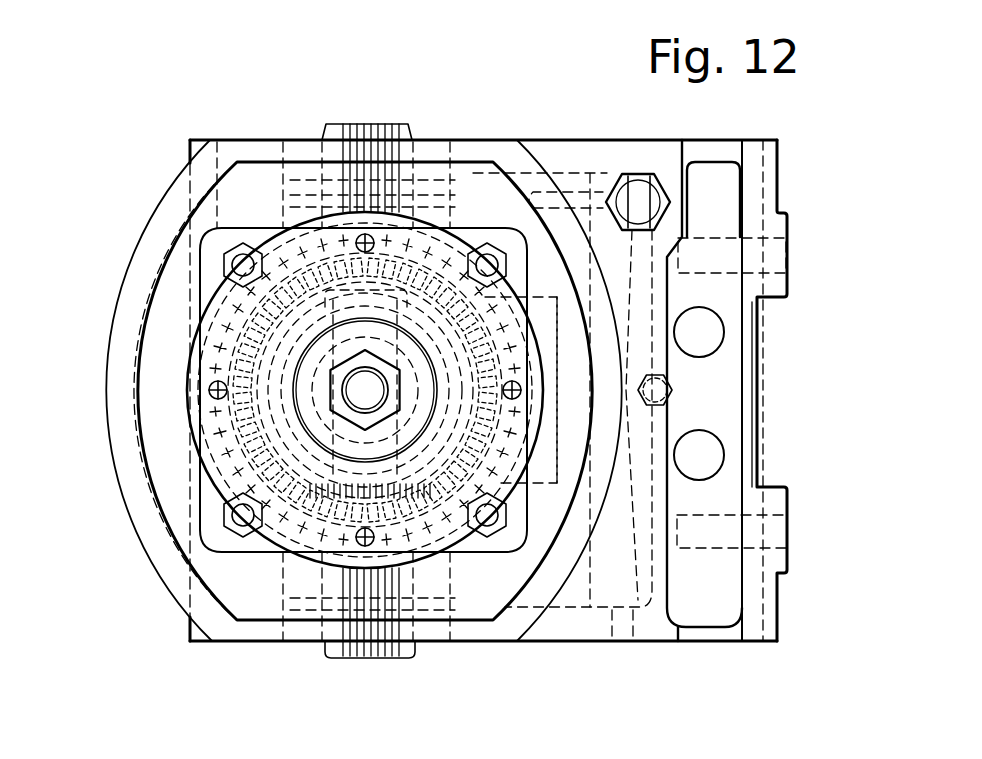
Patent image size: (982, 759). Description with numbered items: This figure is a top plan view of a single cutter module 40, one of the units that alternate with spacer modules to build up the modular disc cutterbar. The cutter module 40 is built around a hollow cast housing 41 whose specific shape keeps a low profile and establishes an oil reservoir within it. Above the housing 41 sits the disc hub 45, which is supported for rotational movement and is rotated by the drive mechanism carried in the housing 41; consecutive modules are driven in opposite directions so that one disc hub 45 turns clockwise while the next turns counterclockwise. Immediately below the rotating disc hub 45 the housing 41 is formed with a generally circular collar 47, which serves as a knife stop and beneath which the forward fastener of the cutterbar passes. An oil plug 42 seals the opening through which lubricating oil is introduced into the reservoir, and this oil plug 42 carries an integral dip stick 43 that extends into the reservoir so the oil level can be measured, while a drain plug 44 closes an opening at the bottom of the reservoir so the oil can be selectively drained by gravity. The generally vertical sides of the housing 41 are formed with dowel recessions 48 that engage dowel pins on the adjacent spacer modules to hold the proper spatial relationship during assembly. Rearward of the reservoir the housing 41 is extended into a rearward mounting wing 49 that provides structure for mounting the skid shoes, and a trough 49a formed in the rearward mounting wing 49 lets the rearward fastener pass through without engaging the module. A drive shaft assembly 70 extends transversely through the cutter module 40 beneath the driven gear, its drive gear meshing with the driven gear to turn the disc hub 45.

The cutter module 40 is at (147, 118).
The hollow cast housing 41 is at (578, 642).
The oil plug 42 is at (645, 172).
The integral dip stick 43 is at (567, 195).
The drain plug 44 is at (673, 386).
The disc hub 45 is at (280, 538).
The generally circular collar 47 is at (112, 326).
The dowel recessions 48 is at (228, 130).
The rearward mounting wing 49 is at (757, 306).
The trough 49a is at (716, 138).
The drive shaft assembly 70 is at (360, 122).